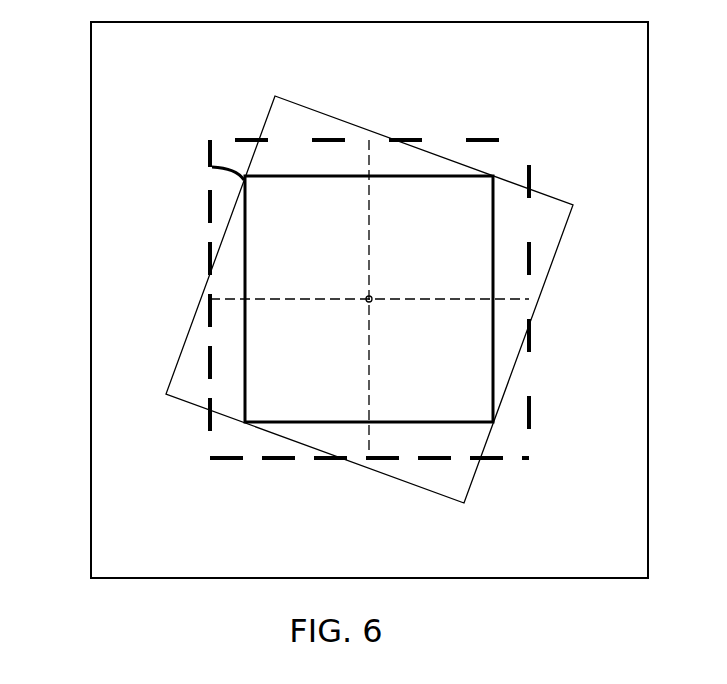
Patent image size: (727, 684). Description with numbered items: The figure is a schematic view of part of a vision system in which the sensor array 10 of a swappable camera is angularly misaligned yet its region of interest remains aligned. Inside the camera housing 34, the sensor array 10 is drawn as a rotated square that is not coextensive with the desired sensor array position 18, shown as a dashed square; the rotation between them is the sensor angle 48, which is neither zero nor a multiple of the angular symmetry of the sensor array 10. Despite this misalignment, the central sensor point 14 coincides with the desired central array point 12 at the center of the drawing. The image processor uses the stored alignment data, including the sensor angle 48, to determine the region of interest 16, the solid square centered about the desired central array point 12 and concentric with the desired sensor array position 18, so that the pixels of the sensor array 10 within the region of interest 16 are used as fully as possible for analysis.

The sensor array 10 is at (185, 402).
The desired central array point 12 is at (372, 301).
The central sensor point 14 is at (366, 302).
The region of interest 16 is at (493, 215).
The desired sensor array position 18 is at (210, 212).
The camera housing 34 is at (90, 268).
The sensor angle 48 is at (232, 166).